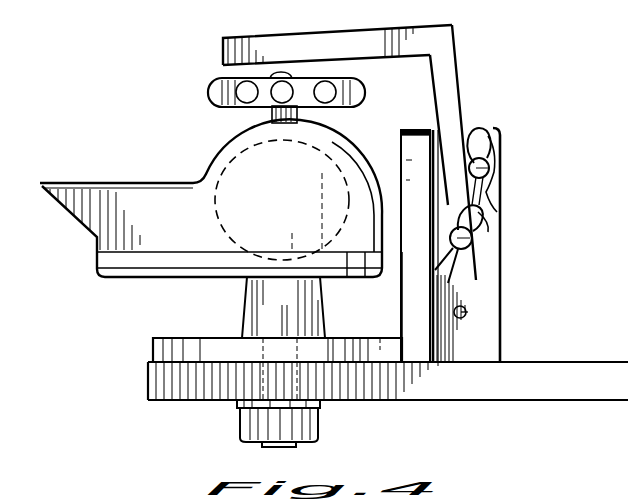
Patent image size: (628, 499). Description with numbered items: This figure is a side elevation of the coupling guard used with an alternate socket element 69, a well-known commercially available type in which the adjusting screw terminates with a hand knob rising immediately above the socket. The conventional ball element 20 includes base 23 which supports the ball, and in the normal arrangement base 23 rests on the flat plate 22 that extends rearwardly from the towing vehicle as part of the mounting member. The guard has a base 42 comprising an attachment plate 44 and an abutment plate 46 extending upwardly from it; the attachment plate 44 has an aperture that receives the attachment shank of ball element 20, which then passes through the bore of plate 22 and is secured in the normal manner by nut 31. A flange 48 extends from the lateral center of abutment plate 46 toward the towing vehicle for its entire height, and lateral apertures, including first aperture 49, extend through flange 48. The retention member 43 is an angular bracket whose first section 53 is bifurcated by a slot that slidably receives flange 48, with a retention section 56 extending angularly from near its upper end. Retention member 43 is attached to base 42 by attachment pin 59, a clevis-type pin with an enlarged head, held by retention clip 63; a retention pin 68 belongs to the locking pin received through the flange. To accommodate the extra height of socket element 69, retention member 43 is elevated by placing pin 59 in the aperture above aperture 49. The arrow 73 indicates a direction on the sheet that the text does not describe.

The hitch assembly 20 is at (237, 308).
The base plate 22 is at (595, 361).
The ball 23 is at (247, 292).
The nut 31 is at (323, 413).
The housing 42 is at (337, 323).
The beam 43 is at (353, 26).
The mounting block 44 is at (153, 346).
The upright 46 is at (400, 160).
The plate 48 is at (500, 298).
The pivot hole 49 is at (466, 313).
The arm 53 is at (459, 75).
The handle 56 is at (286, 36).
The ring 59 is at (498, 156).
The cotter pin 63 is at (490, 226).
The cotter pin 68 is at (478, 127).
The lever 69 is at (125, 180).
The direction arrow 73 is at (624, 491).